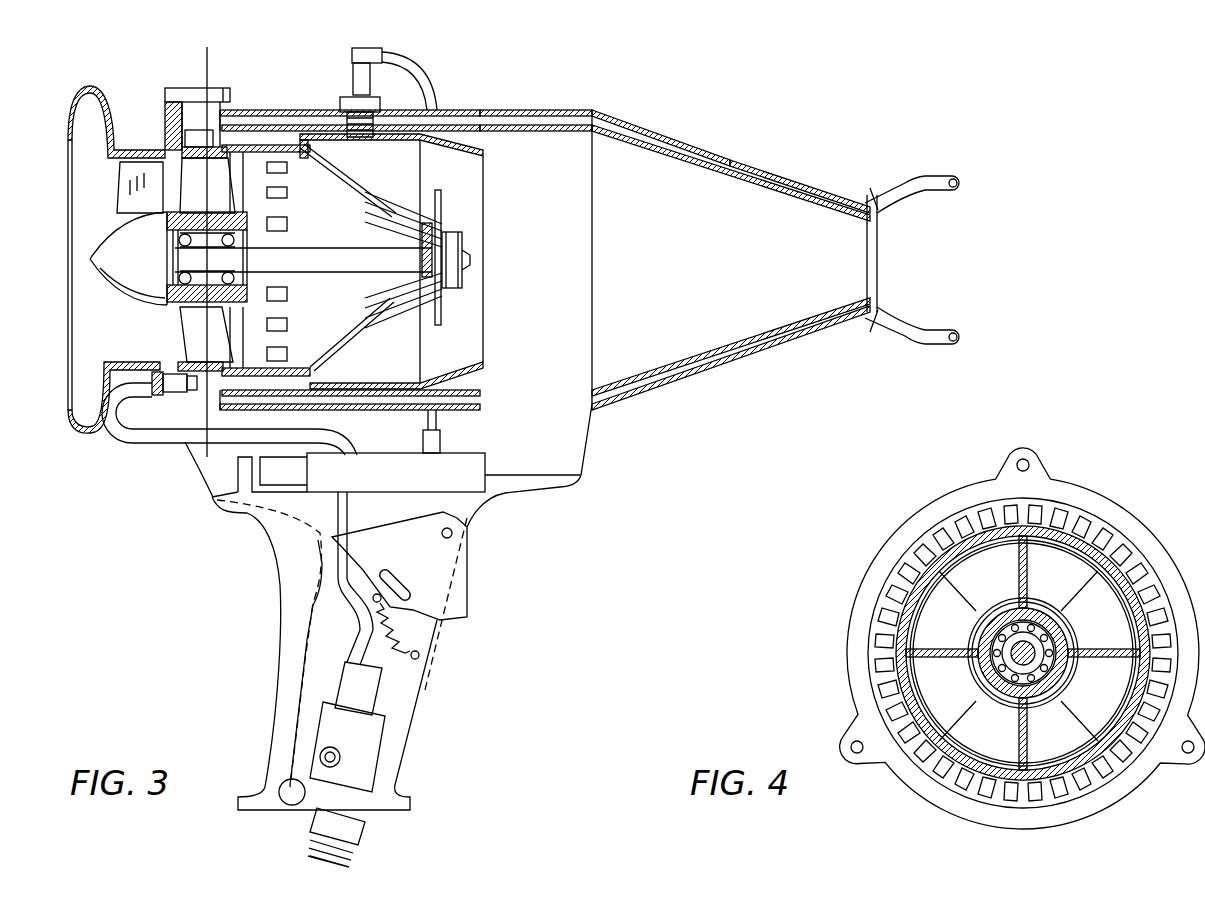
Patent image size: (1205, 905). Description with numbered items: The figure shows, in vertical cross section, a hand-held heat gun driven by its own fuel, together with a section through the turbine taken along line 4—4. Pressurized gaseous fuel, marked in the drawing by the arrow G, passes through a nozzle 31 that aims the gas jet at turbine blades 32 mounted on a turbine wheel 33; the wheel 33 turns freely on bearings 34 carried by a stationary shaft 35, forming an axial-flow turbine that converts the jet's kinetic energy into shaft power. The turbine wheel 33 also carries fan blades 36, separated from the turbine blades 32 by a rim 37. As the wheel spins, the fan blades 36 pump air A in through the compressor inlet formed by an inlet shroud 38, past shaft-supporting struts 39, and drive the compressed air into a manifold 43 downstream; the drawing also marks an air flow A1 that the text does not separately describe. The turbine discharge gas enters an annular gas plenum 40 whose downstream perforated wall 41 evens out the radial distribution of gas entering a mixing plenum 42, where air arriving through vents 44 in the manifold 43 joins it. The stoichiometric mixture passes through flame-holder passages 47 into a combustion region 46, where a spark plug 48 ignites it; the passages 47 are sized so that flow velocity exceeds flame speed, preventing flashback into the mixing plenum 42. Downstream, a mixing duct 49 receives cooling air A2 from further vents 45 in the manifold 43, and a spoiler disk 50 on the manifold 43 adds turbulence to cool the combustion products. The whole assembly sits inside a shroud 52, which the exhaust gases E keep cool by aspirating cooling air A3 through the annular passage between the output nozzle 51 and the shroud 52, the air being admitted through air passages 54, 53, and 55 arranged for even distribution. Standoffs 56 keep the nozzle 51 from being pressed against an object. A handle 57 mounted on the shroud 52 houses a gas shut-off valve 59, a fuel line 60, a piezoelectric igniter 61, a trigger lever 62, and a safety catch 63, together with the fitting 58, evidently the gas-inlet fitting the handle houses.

In FIG. 3, the nozzle 31 is at (150, 402).
In FIG. 3, the turbine blades 32 is at (210, 477).
In FIG. 4, the turbine blades 32 is at (1110, 545).
In FIG. 3, the turbine wheel 33 is at (177, 302).
In FIG. 3, the bearings 34 is at (287, 324).
In FIG. 3, the stationary shaft 35 is at (310, 262).
In FIG. 3, the fan blades 36 is at (200, 182).
In FIG. 4, the fan blades 36 is at (933, 627).
In FIG. 3, the rim 37 is at (185, 152).
In FIG. 4, the rim 37 is at (883, 686).
In FIG. 3, the inlet shroud 38 is at (82, 104).
In FIG. 3, the shaft-supporting struts 39 is at (125, 172).
In FIG. 3, the annular gas plenum 40 is at (227, 132).
In FIG. 3, the perforated wall 41 is at (245, 145).
In FIG. 3, the mixing plenum 42 is at (267, 137).
In FIG. 3, the manifold 43 is at (345, 345).
In FIG. 3, the vents 44 is at (280, 195).
In FIG. 3, the vents 45 is at (375, 228).
In FIG. 3, the combustion region 46 is at (398, 170).
In FIG. 3, the flame-holder passages 47 is at (312, 140).
In FIG. 3, the spark plug 48 is at (360, 82).
In FIG. 3, the mixing duct 49 is at (552, 250).
In FIG. 3, the spoiler disk 50 is at (441, 310).
In FIG. 3, the output nozzle 51 is at (785, 212).
In FIG. 3, the shroud 52 is at (798, 180).
In FIG. 3, the air passage 53 is at (512, 112).
In FIG. 3, the air passage 54 is at (655, 133).
In FIG. 3, the air passage 55 is at (742, 150).
In FIG. 3, the standoffs 56 is at (922, 347).
In FIG. 3, the handle 57 is at (415, 690).
In FIG. 3, the ball valve 58 is at (320, 815).
In FIG. 3, the gas shut-off valve 59 is at (335, 713).
In FIG. 3, the fuel line 60 is at (345, 606).
In FIG. 3, the piezoelectric igniter 61 is at (460, 465).
In FIG. 3, the trigger lever 62 is at (290, 548).
In FIG. 3, the safety catch 63 is at (465, 585).
In FIG. 3, the section line 4— 4 is at (207, 47).
In FIG. 3, the air A is at (90, 190).
In FIG. 3, the air flow A1 is at (298, 145).
In FIG. 3, the cooling air A2 is at (392, 218).
In FIG. 3, the cooling air A3 is at (505, 110).
In FIG. 3, the exhaust gases E is at (858, 247).
In FIG. 3, the gas flow G is at (150, 382).